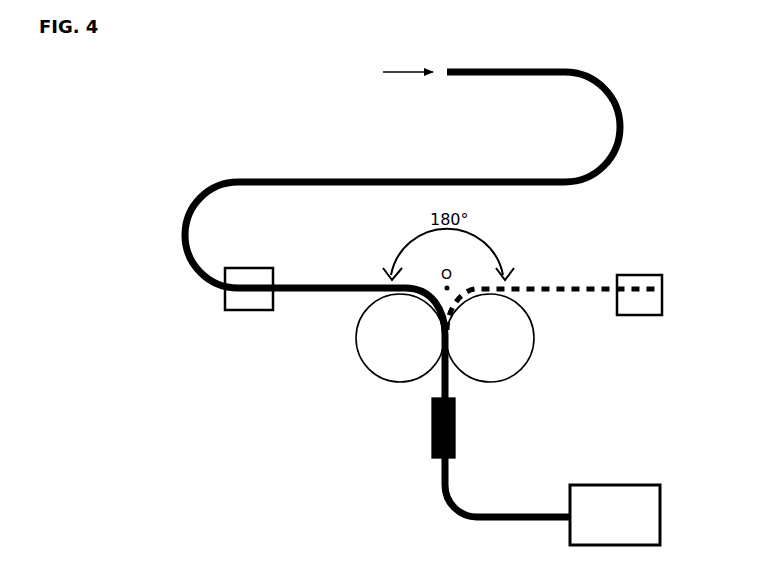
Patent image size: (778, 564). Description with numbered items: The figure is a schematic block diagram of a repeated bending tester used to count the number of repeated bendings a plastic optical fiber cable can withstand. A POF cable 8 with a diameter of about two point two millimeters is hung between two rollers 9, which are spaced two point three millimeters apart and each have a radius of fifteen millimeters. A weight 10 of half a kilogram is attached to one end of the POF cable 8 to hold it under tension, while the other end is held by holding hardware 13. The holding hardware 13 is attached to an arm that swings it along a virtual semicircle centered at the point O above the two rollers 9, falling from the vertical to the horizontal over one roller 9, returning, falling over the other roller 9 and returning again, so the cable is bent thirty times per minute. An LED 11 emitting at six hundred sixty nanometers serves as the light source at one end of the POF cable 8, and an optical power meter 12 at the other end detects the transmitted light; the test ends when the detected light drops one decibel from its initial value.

The POF cable 8 is at (623, 122).
The rollers 9 is at (499, 352).
The weight 10 is at (458, 422).
The LED 11 is at (404, 79).
The optical power meter 12 is at (622, 502).
The holding hardware 13 is at (255, 269).